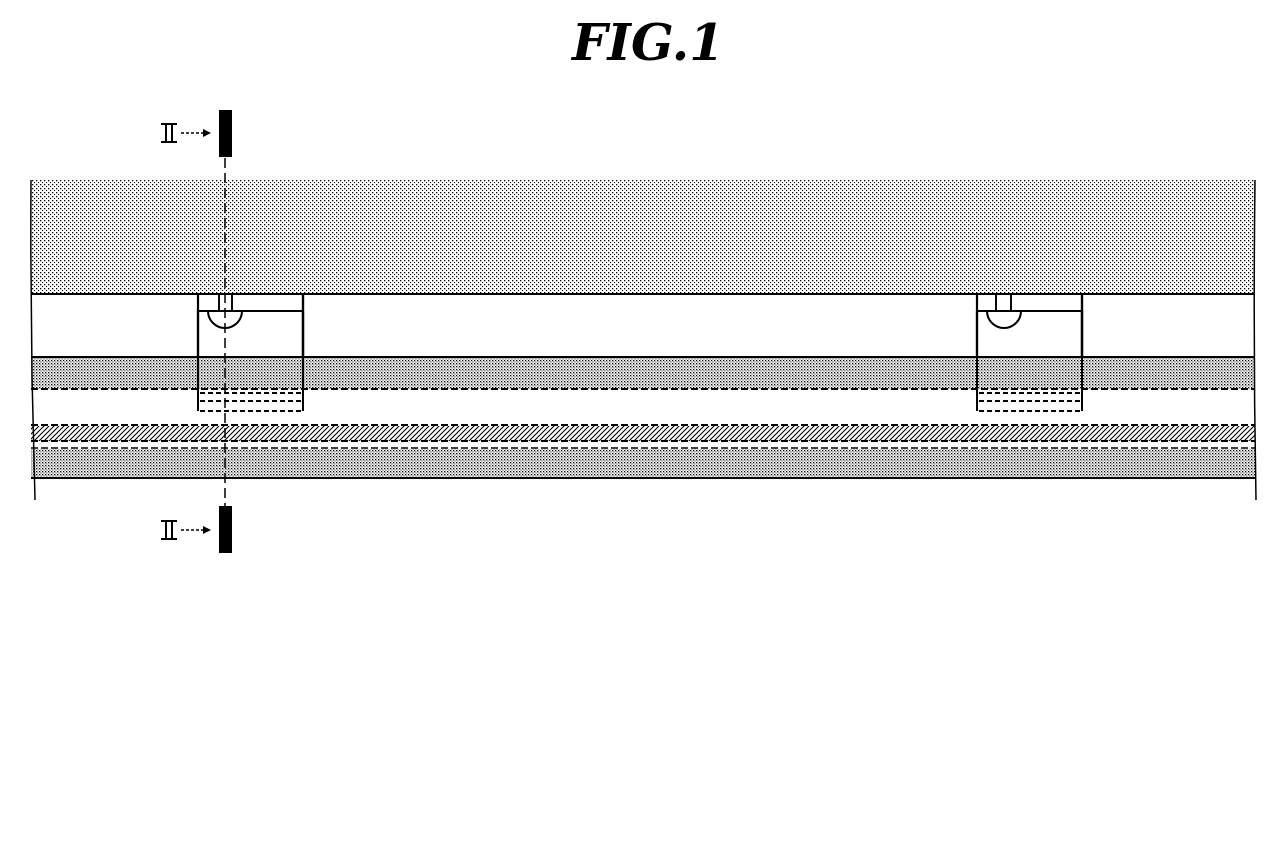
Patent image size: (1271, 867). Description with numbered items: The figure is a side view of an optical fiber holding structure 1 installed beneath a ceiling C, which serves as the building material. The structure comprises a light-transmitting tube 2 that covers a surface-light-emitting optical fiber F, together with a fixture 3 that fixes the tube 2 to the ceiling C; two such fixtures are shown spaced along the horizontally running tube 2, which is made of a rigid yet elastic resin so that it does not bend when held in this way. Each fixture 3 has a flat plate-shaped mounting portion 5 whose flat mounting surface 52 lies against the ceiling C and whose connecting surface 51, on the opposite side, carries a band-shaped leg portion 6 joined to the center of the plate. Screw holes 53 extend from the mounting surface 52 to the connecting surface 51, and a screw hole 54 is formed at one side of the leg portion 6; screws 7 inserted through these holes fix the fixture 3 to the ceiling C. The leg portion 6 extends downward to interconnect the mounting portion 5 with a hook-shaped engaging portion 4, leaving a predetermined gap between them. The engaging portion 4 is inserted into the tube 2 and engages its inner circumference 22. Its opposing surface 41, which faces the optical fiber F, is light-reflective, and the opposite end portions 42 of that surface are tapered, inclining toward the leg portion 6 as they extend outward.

The optical fiber holding structure 1 is at (651, 546).
The light-transmitting tube 2 is at (643, 357).
The inner circumference 22 is at (422, 392).
The fixture 3 is at (622, 327).
The engaging portion 4 is at (644, 389).
The opposing surface 41 is at (290, 414).
The opposite end portions 42 is at (300, 390).
The mounting portion 5 is at (633, 295).
The connecting surface 51 is at (303, 315).
The mounting surface 52 is at (266, 292).
The screw holes 53 is at (583, 272).
The screw hole 54 is at (218, 292).
The leg portion 6 is at (196, 336).
The screws 7 is at (234, 320).
The ceiling C is at (649, 251).
The surface-light-emitting optical fiber F is at (573, 432).